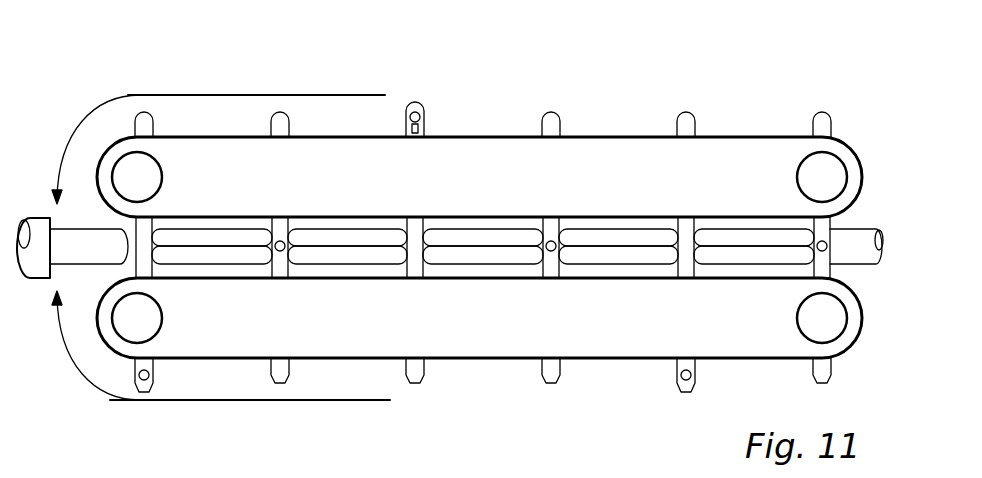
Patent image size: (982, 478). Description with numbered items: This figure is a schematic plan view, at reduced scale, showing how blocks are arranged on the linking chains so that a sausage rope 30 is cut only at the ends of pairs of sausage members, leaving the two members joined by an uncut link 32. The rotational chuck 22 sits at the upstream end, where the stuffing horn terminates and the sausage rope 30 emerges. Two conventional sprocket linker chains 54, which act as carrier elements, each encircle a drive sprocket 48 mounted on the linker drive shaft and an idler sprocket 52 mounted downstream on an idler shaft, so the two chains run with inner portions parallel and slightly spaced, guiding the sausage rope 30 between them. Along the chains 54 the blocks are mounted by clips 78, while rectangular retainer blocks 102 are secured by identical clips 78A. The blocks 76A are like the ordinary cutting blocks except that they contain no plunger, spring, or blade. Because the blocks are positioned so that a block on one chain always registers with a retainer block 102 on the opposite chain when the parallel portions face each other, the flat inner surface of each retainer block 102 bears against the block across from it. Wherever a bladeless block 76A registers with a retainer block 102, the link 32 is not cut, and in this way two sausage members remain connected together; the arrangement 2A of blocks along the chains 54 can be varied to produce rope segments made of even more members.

The chain assembly 2A is at (277, 85).
The rotational chuck 22 is at (38, 218).
The sausage rope 30 is at (574, 237).
The link 32 is at (370, 243).
The sprocket 48 is at (150, 170).
The idler sprocket 52 is at (803, 167).
The sprocket linker chain 54 is at (465, 137).
The block 76A is at (549, 367).
The clip 78 is at (282, 217).
The clip 78A is at (140, 267).
The retainer block 102 is at (265, 123).